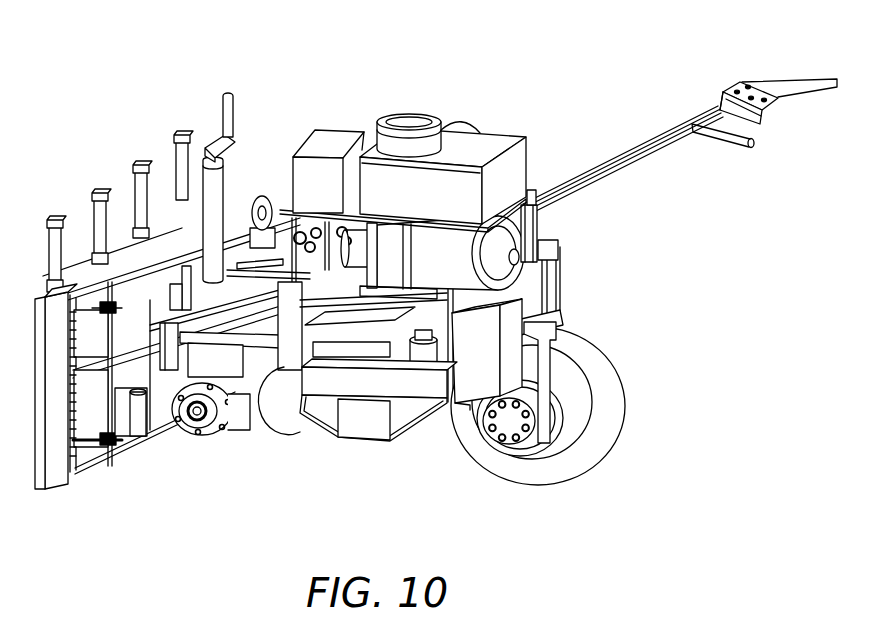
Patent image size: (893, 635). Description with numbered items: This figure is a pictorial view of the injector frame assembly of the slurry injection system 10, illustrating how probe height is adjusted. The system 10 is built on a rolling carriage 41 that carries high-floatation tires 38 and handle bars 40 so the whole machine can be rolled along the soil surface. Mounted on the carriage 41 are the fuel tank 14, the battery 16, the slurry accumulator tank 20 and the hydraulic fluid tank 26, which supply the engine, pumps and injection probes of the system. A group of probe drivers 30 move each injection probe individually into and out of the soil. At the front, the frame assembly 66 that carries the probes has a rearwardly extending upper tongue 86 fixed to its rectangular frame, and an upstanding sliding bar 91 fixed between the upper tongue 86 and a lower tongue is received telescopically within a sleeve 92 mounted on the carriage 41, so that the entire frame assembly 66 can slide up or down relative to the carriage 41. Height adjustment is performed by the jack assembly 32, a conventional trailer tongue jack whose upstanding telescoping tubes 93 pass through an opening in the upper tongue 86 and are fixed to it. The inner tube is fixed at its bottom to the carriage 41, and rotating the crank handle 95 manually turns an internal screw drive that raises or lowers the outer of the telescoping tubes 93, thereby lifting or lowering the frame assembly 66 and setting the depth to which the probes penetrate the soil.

The system 10 is at (419, 279).
The fuel tank 14 is at (502, 138).
The battery 16 is at (337, 132).
The slurry accumulator tank 20 is at (494, 254).
The hydraulic fluid tank 26 is at (372, 420).
The probe drivers 30 is at (43, 245).
The jack assembly 32 is at (235, 101).
The high-floatation tires 38 is at (541, 462).
The handle bars 40 is at (658, 148).
The carriage 41 is at (417, 413).
The frame assembly 66 is at (36, 465).
The upper tongue 86 is at (192, 284).
The sliding bar 91 is at (186, 300).
The sleeve 92 is at (161, 420).
The telescoping tubes 93 is at (213, 173).
The crank handle 95 is at (236, 121).